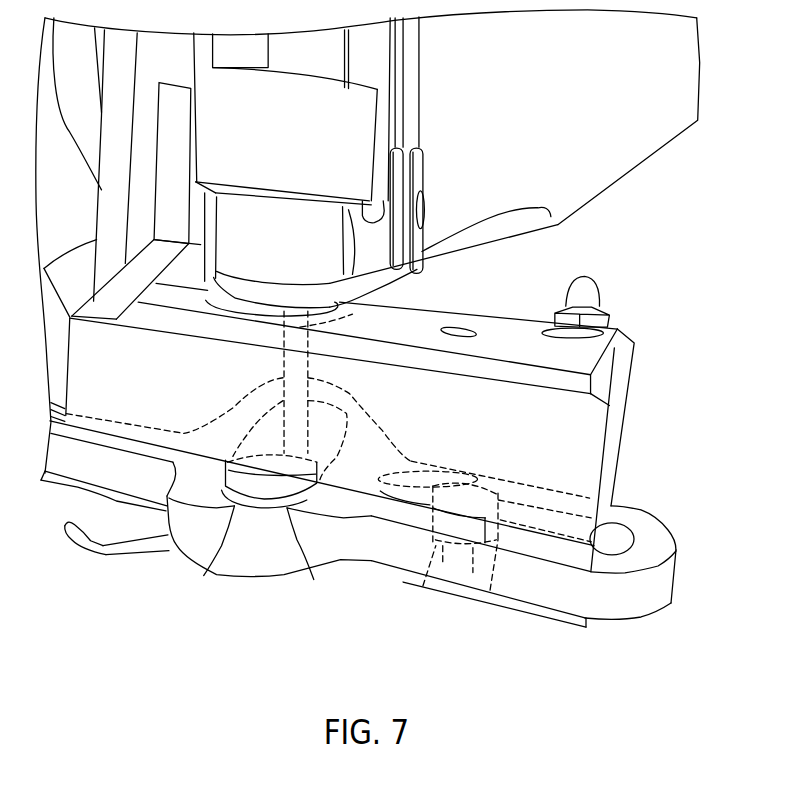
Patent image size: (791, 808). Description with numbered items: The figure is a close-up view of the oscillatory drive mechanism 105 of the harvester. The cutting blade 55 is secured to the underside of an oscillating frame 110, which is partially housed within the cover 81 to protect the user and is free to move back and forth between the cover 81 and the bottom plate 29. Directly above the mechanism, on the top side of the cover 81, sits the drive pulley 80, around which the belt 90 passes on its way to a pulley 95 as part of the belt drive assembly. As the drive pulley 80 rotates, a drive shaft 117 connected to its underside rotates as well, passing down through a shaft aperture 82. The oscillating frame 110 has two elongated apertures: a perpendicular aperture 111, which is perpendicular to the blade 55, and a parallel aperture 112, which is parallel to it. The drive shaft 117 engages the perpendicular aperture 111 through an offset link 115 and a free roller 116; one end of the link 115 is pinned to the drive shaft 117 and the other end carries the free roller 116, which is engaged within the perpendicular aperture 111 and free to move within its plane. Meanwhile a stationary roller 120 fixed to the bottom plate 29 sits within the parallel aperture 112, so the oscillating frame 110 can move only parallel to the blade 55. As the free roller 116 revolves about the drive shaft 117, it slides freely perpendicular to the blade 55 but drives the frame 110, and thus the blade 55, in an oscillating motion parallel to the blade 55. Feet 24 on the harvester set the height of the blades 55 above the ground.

The feet 24 is at (127, 552).
The bottom plate 29 is at (553, 622).
The blade 55 is at (80, 483).
The drive pulley 80 is at (247, 248).
The cover 81 is at (583, 437).
The shaft aperture 82 is at (340, 320).
The belt 90 is at (388, 275).
The pulley 95 is at (376, 236).
The oscillatory drive mechanism 105 is at (48, 592).
The oscillating frame 110 is at (70, 457).
The perpendicular aperture 111 is at (203, 576).
The parallel aperture 112 is at (465, 563).
The link 115 is at (240, 480).
The free roller 116 is at (314, 580).
The drive shaft 117 is at (293, 370).
The stationary roller 120 is at (427, 549).